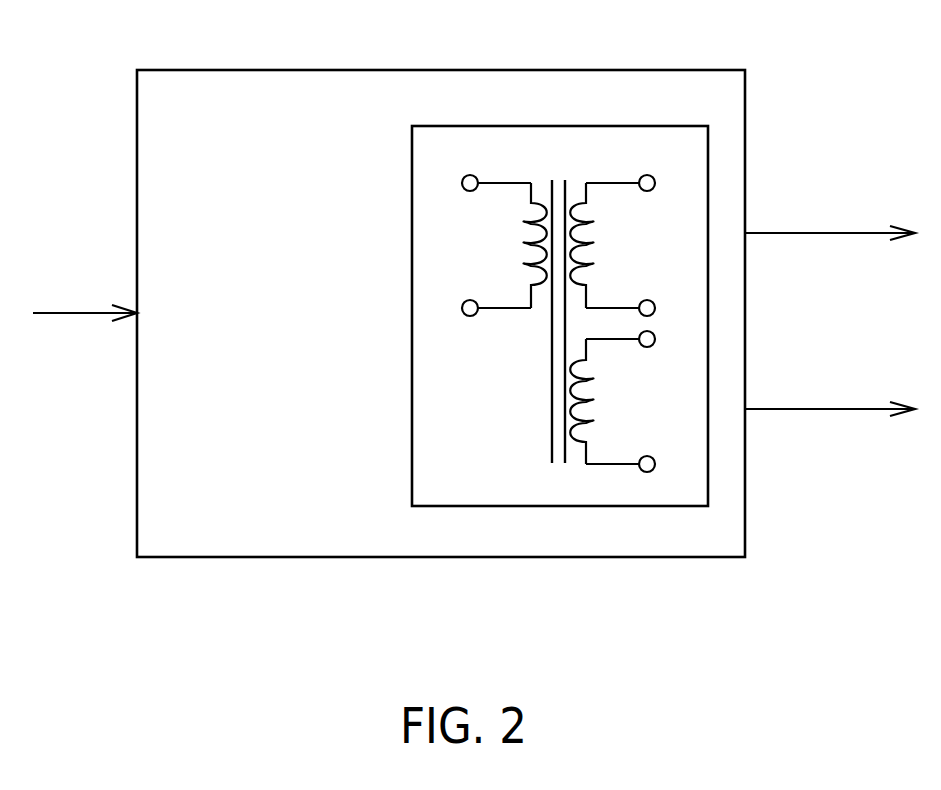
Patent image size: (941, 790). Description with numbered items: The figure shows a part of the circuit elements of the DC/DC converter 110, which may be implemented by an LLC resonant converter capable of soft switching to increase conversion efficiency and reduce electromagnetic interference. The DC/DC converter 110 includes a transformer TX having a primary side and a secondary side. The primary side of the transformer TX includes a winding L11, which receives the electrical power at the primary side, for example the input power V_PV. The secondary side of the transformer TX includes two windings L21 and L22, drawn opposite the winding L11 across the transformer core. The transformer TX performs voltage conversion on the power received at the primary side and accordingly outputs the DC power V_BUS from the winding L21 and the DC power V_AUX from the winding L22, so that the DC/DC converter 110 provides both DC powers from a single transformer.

The DC/DC converter 110 is at (687, 70).
The transformer TX is at (633, 126).
The winding L11 is at (502, 245).
The winding L21 is at (612, 245).
The winding L22 is at (613, 401).